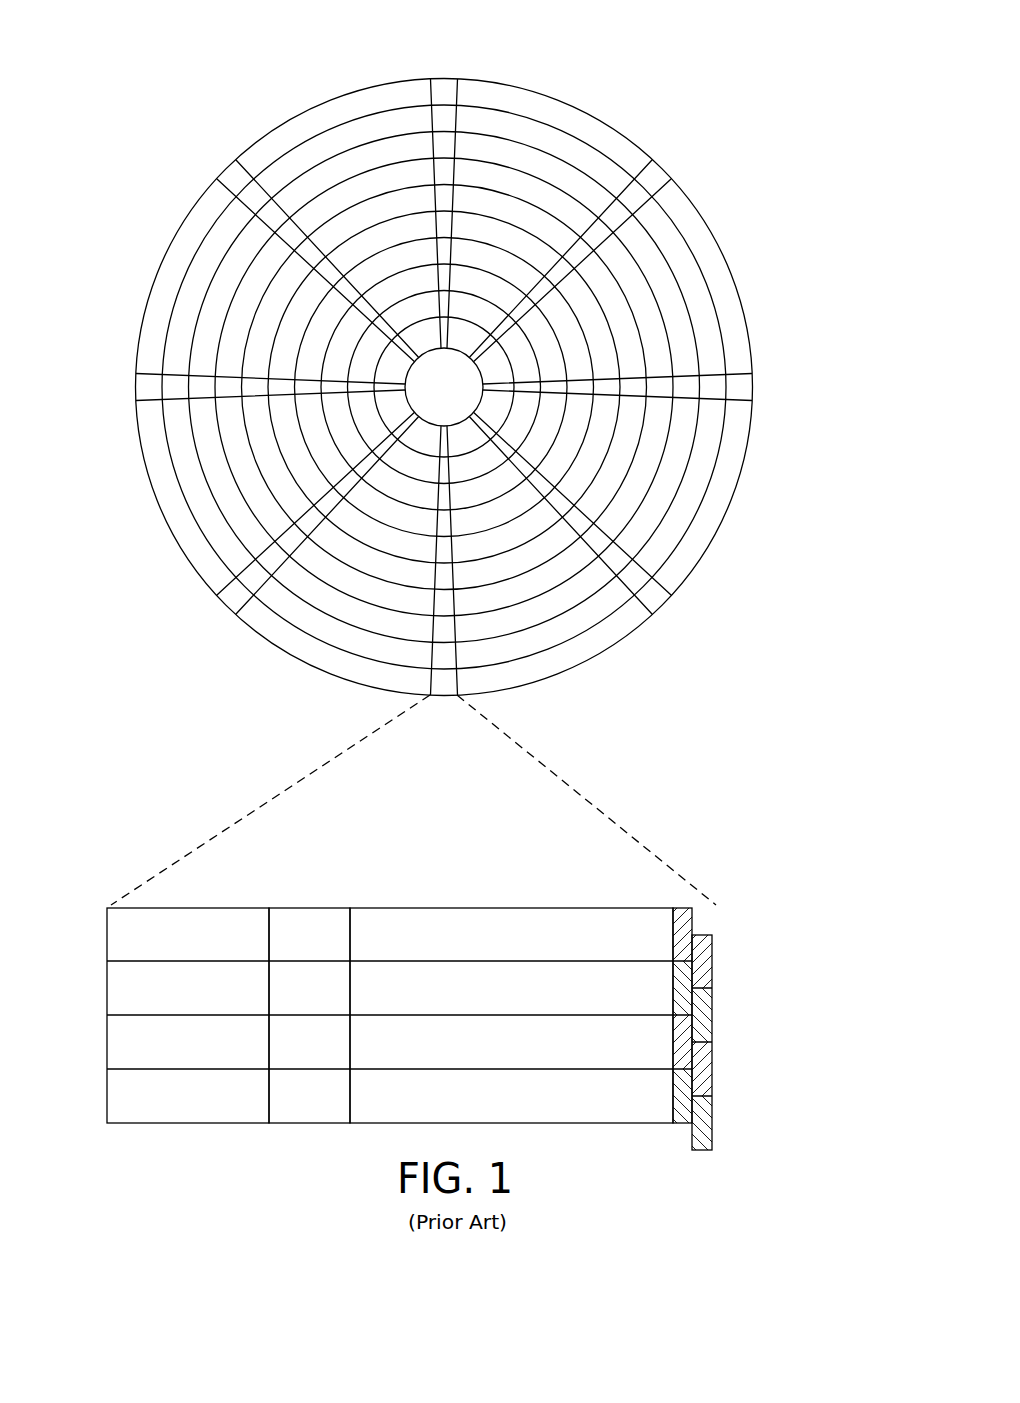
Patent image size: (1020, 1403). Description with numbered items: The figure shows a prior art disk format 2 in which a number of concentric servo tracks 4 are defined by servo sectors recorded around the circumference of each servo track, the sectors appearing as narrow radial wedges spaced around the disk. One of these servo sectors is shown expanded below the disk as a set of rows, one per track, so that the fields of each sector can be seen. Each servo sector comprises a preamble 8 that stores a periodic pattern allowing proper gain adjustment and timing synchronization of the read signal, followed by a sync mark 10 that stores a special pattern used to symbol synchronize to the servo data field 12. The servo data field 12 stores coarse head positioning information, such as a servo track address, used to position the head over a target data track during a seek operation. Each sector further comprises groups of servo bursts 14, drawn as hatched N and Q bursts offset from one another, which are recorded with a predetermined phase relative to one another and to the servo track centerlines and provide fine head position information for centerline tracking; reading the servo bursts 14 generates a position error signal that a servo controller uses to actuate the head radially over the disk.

The disk format 2 is at (212, 76).
The servo tracks 4 is at (548, 138).
The preamble 8 is at (196, 908).
The sync mark 10 is at (310, 908).
The servo data field 12 is at (497, 908).
The servo bursts 14 is at (712, 902).